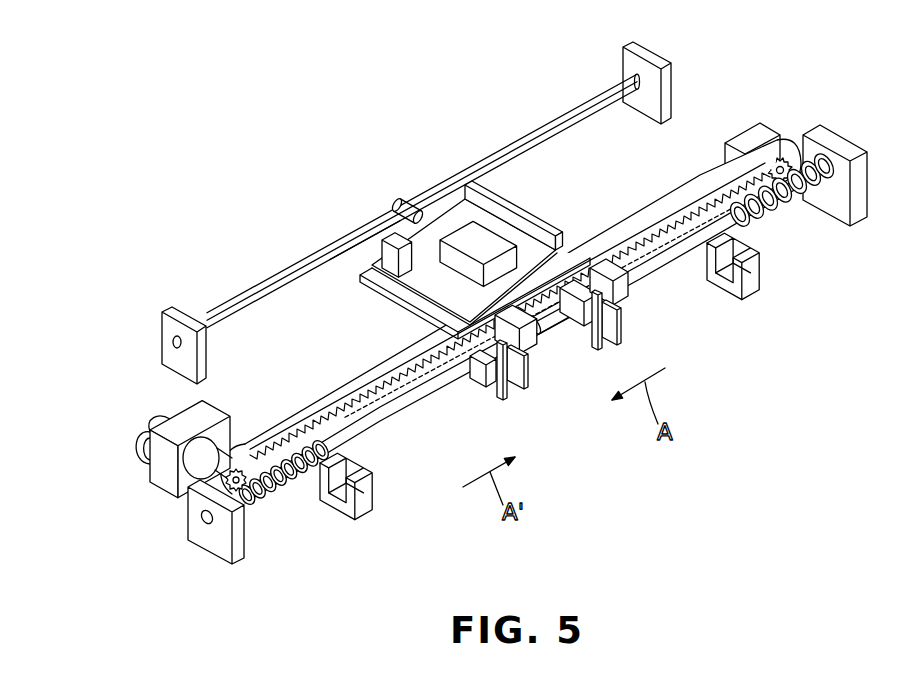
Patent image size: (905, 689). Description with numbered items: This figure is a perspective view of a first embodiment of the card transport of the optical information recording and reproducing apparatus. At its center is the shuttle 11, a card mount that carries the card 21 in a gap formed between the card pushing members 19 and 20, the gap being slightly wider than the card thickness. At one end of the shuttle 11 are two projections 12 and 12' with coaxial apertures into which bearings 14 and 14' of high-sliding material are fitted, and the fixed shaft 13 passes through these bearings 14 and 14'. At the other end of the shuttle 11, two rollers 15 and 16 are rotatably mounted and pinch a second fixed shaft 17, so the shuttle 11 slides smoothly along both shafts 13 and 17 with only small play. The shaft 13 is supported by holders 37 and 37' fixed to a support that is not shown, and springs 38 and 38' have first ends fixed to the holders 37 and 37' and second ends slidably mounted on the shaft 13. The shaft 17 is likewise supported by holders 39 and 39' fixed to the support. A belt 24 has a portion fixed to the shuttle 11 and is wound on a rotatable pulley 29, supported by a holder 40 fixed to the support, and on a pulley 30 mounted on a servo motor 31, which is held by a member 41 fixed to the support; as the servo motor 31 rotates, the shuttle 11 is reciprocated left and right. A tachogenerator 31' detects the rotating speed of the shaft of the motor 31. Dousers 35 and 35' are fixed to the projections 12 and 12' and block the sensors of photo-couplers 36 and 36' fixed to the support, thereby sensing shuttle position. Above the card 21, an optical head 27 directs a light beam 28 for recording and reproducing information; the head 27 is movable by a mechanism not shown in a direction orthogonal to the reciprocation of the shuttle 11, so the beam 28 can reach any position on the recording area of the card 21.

The shuttle 11 is at (540, 306).
The projection 12 is at (518, 373).
The projection 12' is at (638, 302).
The fixed shaft 13 is at (383, 426).
The bearing 14 is at (472, 389).
The bearing 14' is at (583, 333).
The roller 15 is at (396, 204).
The roller 16 is at (362, 228).
The fixed shaft 17 is at (240, 298).
The card pushing member 19 is at (578, 248).
The card pushing member 20 is at (462, 194).
The card 21 is at (408, 314).
The belt 24 is at (413, 362).
The optical head 27 is at (490, 244).
The light beam 28 is at (522, 250).
The rotatable pulley 29 is at (790, 158).
The pulley 30 is at (240, 522).
The servo motor 31 is at (179, 471).
The tachogenerator 31' is at (129, 430).
The douser 35 is at (493, 397).
The douser 35' is at (632, 323).
The photo-coupler 36 is at (349, 513).
The photo-coupler 36' is at (733, 293).
The holder 37 is at (211, 539).
The holder 37' is at (840, 200).
The spring 38 is at (284, 493).
The spring 38' is at (782, 213).
The holder 39 is at (152, 332).
The holder 39' is at (671, 73).
The holder 40 is at (760, 128).
The member 41 is at (157, 472).